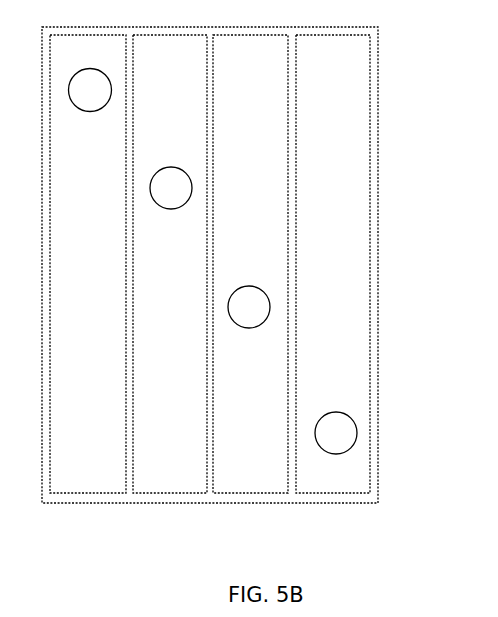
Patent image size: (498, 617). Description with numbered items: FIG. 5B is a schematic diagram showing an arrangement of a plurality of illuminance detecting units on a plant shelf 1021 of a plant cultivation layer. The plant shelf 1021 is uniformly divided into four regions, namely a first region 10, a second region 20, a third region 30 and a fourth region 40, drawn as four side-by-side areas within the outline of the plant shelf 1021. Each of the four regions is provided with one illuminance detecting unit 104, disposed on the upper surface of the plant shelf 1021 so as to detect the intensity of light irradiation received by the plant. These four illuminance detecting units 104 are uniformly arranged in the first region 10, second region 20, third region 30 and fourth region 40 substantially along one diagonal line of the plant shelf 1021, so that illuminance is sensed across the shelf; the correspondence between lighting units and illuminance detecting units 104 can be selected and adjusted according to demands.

The first region 10 is at (80, 478).
The second region 20 is at (173, 478).
The third region 30 is at (250, 478).
The fourth region 40 is at (328, 478).
The illuminance detecting unit 104 is at (352, 428).
The plant shelf 1021 is at (373, 132).